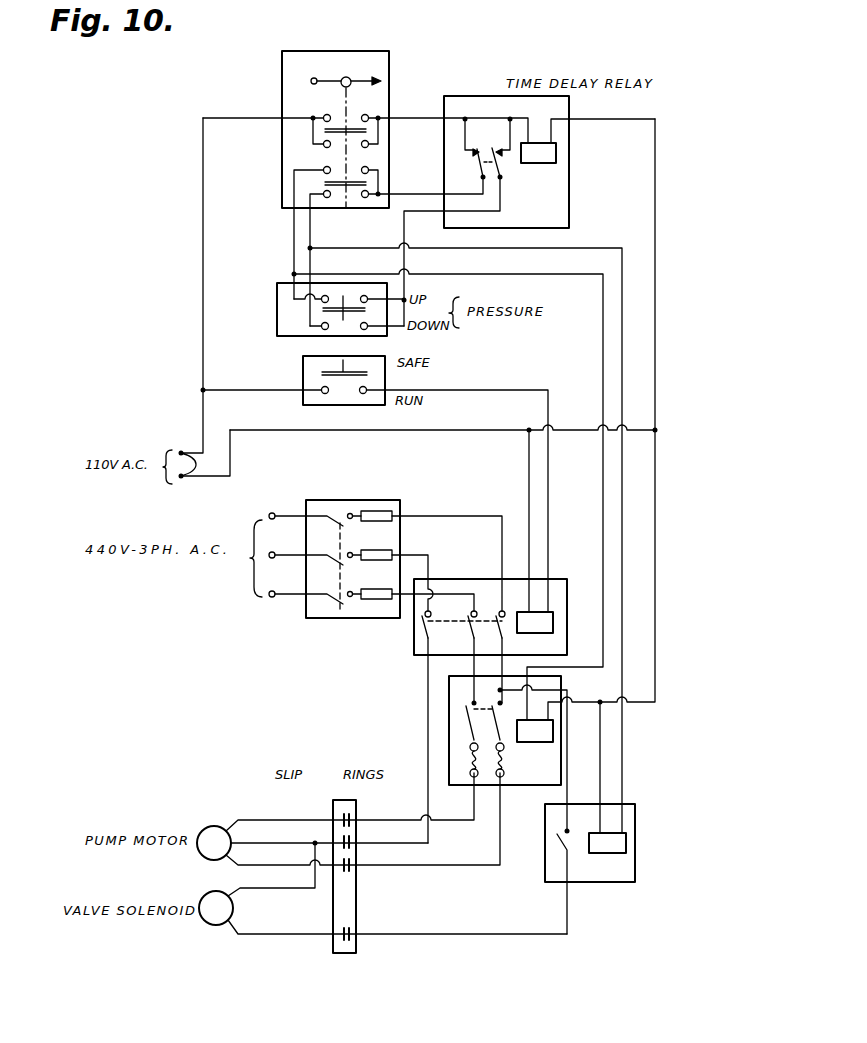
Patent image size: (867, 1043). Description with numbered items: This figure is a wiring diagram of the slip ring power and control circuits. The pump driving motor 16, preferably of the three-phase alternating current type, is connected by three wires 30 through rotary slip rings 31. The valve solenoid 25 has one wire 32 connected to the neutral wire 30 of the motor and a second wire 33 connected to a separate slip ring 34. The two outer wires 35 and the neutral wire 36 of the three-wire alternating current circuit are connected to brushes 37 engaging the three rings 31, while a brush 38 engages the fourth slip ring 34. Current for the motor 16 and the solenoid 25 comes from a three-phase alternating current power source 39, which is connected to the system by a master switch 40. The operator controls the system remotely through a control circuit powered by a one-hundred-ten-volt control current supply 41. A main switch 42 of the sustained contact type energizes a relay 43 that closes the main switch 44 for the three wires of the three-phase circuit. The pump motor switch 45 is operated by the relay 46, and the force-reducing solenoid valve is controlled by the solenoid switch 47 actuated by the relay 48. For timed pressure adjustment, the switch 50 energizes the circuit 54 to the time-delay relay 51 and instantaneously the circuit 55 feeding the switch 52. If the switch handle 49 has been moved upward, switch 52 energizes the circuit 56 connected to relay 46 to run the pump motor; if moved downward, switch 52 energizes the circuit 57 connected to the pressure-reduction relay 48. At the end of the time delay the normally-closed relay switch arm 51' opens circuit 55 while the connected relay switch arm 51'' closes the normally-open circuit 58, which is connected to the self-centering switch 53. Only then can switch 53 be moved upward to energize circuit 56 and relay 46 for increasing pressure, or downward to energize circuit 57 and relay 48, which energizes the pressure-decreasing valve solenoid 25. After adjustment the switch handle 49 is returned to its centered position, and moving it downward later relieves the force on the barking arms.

The pump driving motor 16 is at (220, 826).
The valve solenoid 25 is at (214, 925).
The wires 30 is at (258, 866).
The rotary slip rings 31 is at (337, 870).
The wire 32 is at (268, 888).
The second wire 33 is at (263, 936).
The separate slip ring 34 is at (333, 940).
The outer wires 35 is at (433, 868).
The neutral wire 36 is at (415, 845).
The brushes 37 is at (352, 868).
The brush 38 is at (350, 937).
The three-phase alternating current power source 39 is at (273, 591).
The master switch 40 is at (343, 521).
The 110-volt control current supply 41 is at (193, 479).
The main switch 42 is at (303, 362).
The relay 43 is at (553, 625).
The main switch 44 is at (421, 618).
The pump motor switch 45 is at (463, 707).
The relay 46 is at (547, 742).
The solenoid switch 47 is at (556, 850).
The relay 48 is at (626, 848).
The switch handle 49 is at (350, 84).
The switch 50 is at (318, 130).
The time-delay relay 51 is at (549, 162).
The relay switch arm 51' is at (468, 154).
The relay switch arm 51'' is at (517, 159).
The switch 52 is at (318, 183).
The switch 53 is at (310, 306).
The circuit 54 is at (434, 119).
The circuit 55 is at (431, 194).
The circuit 56 is at (586, 274).
The circuit 57 is at (582, 248).
The circuit 58 is at (404, 212).